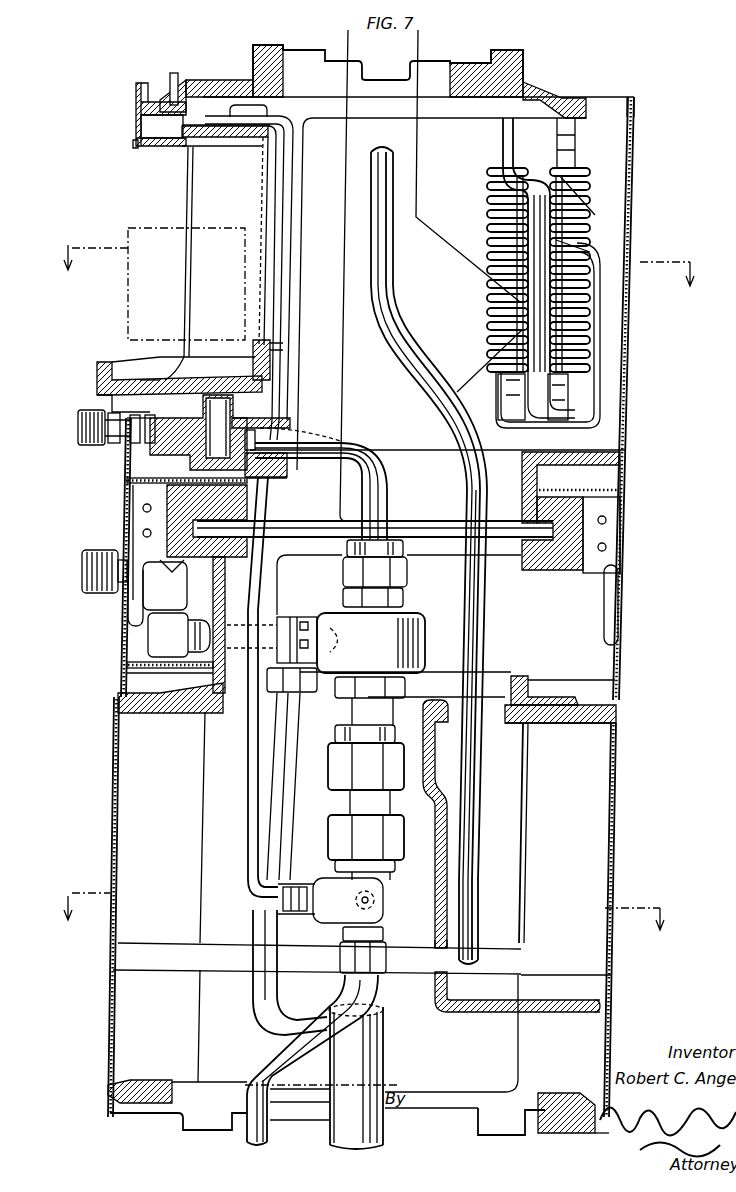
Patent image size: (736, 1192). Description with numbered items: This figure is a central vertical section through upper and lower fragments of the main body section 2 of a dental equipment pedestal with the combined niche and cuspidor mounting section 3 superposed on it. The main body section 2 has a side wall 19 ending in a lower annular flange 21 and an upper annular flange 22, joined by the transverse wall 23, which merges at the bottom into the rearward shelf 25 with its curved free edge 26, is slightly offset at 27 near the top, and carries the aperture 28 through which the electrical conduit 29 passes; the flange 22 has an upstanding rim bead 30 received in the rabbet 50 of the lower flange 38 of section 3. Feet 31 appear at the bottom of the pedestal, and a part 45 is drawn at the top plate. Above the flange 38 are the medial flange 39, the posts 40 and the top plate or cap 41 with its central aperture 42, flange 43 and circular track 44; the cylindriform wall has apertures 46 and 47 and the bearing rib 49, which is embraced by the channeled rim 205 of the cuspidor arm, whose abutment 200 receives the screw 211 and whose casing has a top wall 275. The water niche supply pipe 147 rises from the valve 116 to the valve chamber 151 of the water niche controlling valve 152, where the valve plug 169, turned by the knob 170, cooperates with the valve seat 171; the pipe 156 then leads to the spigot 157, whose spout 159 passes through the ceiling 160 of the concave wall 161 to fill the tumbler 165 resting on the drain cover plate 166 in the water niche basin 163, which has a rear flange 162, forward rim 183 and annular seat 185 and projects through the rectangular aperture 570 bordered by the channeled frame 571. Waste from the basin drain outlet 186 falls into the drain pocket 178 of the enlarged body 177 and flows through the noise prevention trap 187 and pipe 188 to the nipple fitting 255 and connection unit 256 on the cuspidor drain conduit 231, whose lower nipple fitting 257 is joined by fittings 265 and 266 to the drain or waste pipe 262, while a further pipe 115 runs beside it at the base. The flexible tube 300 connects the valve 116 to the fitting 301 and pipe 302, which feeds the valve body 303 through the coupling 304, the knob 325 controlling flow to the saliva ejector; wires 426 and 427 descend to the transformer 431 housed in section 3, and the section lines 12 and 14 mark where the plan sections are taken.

The main body section 2 is at (207, 822).
The combined niche and cuspidor mounting section 3 is at (437, 473).
The section line 12— 12 is at (375, 261).
The section line 14— 14 is at (362, 907).
The side wall 19 is at (516, 863).
The lower annular flange 21 is at (118, 1092).
The upper annular flange 22 is at (580, 723).
The transverse wall 23 is at (440, 930).
The shelf 25 is at (560, 1004).
The curved free edge 26 is at (602, 1010).
The offset 27 is at (438, 765).
The aperture 28 is at (490, 723).
The electrical conduit 29 is at (480, 620).
The rim bead 30 is at (200, 713).
The foot 31 is at (193, 1120).
The lower annular horizontal flange 38 is at (565, 702).
The medial flange 39 is at (622, 457).
The posts or standards 40 is at (298, 200).
The top plate or cap 41 is at (585, 92).
The central aperture 42 is at (430, 70).
The flange 43 is at (136, 108).
The circular horizontal track 44 is at (200, 80).
The boss 45 is at (526, 62).
The aperture 46 is at (414, 523).
The aperture 47 is at (232, 481).
The bearing rib 49 is at (585, 533).
The rabbet 50 is at (512, 676).
The outlet tube 115 is at (267, 1134).
The valve 116 is at (383, 898).
The water niche supply pipe 147 is at (250, 777).
The valve chamber 151 is at (165, 375).
The water niche controlling valve 152 is at (172, 450).
The pipe 156 is at (296, 295).
The water niche spigot 157 is at (176, 104).
The spout 159 is at (172, 150).
The ceiling 160 is at (150, 150).
The concave wall 161 is at (264, 185).
The rear flange 162 is at (283, 348).
The water niche basin 163 is at (183, 370).
The water glass or tumbler 165 is at (128, 316).
The drain cover plate 166 is at (155, 380).
The valve plug 169 is at (127, 455).
The knob 170 is at (78, 427).
The valve seat 171 is at (126, 470).
The enlarged body 177 is at (287, 470).
The drain pocket 178 is at (262, 479).
The forward rim 183 is at (97, 378).
The annular seat 185 is at (108, 396).
The water niche basin drain outlet 186 is at (256, 416).
The noise prevention trap 187 is at (290, 440).
The pipe 188 is at (372, 452).
The abutment 200 is at (135, 532).
The channeled inner rim 205 is at (600, 512).
The screw 211 is at (142, 511).
The cuspidor drain conduit 231 is at (371, 643).
The nipple fitting 255 is at (398, 600).
The connection unit 256 is at (402, 576).
The nipple fitting 257 is at (402, 688).
The drain or waste pipe 262 is at (378, 1060).
The fitting 265 is at (330, 762).
The fitting 266 is at (330, 838).
The top wall 275 is at (140, 484).
The flexible tube 300 is at (250, 1022).
The fitting 301 is at (285, 618).
The pipe 302 is at (135, 663).
The valve body 303 is at (158, 598).
The coupling 304 is at (155, 642).
The valve controlling knob 325 is at (82, 572).
The wire 426 is at (350, 146).
The wire 427 is at (418, 186).
The transformer 431 is at (495, 270).
The rectangular aperture 570 is at (188, 190).
The channeled frame 571 is at (133, 144).